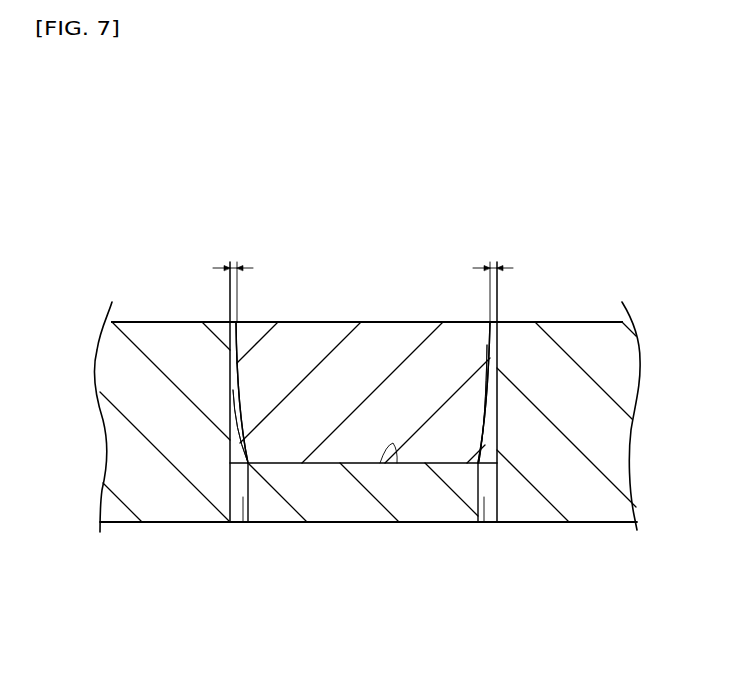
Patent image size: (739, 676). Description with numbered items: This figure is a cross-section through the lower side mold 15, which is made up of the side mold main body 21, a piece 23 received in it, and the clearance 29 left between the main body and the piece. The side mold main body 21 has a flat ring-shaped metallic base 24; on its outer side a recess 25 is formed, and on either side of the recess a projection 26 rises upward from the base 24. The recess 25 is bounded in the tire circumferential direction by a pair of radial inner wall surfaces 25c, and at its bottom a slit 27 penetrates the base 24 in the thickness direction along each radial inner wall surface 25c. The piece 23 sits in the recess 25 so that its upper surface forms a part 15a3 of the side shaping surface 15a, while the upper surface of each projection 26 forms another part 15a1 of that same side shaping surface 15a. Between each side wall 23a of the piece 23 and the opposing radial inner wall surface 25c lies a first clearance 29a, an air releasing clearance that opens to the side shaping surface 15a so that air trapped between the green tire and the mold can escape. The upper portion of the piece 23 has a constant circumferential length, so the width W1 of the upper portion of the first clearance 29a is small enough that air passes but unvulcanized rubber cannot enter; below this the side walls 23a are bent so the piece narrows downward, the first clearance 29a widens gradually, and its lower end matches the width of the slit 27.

The lower side mold 15 is at (398, 103).
The side shaping surface 15a is at (363, 259).
The part of the side shaping surface 15a1 is at (172, 322).
The part of the side shaping surface 15a3 is at (337, 322).
The side mold main body 21 is at (550, 308).
The piece 23 is at (368, 355).
The side wall 23a is at (250, 465).
The base 24 is at (358, 498).
The recess 25 is at (399, 456).
The radial inner wall surface 25c is at (231, 435).
The projection 26 is at (135, 378).
The slit 27 is at (243, 497).
The clearance 29 is at (363, 385).
The first clearance 29a is at (236, 322).
The width of the first clearance W1 is at (231, 267).